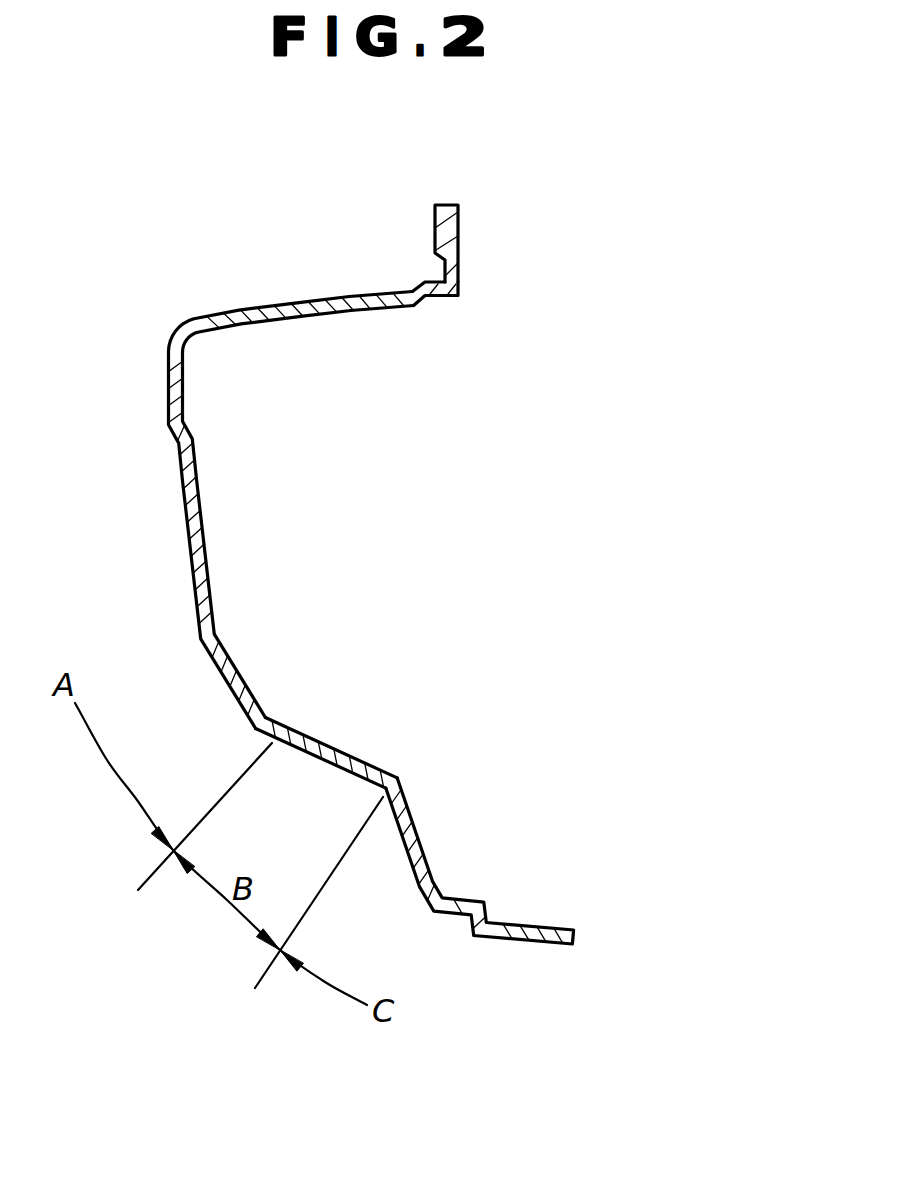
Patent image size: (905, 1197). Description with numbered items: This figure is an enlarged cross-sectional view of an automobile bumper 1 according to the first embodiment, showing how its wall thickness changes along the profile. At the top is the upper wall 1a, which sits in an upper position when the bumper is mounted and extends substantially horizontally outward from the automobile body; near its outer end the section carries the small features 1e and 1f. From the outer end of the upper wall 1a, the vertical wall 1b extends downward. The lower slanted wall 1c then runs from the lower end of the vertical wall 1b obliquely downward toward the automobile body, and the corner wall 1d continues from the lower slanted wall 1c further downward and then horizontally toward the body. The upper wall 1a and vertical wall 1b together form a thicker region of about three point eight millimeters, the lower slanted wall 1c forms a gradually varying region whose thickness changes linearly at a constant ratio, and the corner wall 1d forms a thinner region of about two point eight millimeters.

The automobile bumper 1 is at (345, 676).
The upper wall 1a is at (332, 316).
The vertical wall 1b is at (203, 555).
The lower slanted wall 1c is at (337, 757).
The corner wall 1d is at (462, 902).
The step portion 1e is at (460, 275).
The tab / rib portion 1f is at (460, 220).